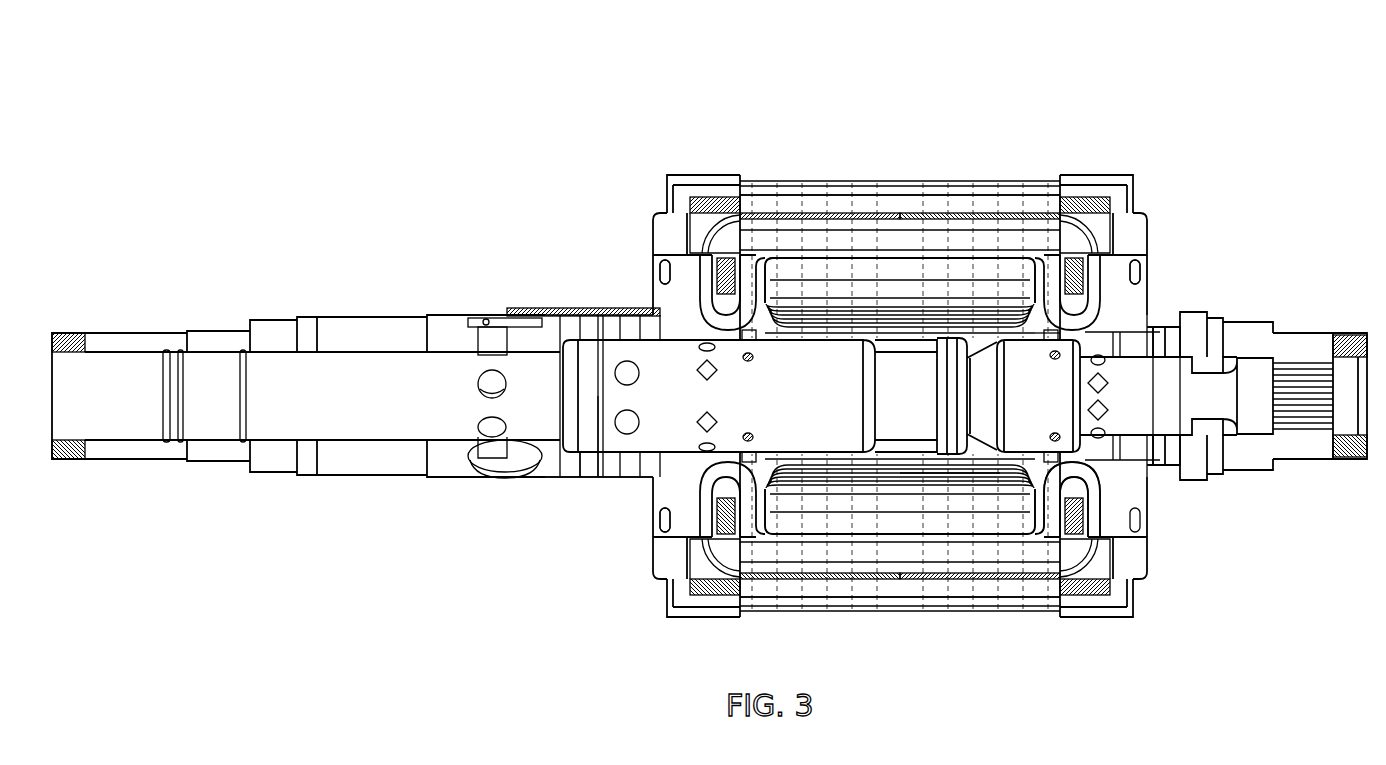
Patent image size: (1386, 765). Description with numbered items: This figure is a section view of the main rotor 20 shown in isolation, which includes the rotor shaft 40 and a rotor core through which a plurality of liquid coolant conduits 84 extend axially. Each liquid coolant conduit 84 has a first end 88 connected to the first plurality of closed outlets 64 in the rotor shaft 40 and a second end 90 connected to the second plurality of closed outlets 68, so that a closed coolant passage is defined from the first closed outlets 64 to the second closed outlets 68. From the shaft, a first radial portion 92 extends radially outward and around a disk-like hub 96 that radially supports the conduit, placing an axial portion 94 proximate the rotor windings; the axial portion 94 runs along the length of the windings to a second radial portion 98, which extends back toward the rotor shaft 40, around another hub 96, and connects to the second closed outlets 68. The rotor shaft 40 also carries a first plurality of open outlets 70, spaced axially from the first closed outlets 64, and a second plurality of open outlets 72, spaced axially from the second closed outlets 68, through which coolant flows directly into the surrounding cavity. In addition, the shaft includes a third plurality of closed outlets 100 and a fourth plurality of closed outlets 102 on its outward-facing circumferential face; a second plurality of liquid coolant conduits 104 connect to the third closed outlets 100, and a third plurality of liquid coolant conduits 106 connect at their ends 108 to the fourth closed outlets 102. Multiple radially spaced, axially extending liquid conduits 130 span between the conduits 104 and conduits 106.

The main rotor 20 is at (1031, 121).
The rotor shaft 40 is at (372, 478).
The first plurality of closed outlets 64 is at (705, 424).
The second plurality of closed outlets 68 is at (1104, 410).
The first plurality of open outlets 70 is at (632, 332).
The second plurality of open outlets 72 is at (1167, 343).
The liquid coolant conduits 84 is at (822, 258).
The first end 88 is at (668, 488).
The second end 90 is at (1100, 463).
The first radial portion 92 is at (672, 520).
The axial portion 94 is at (950, 258).
The disk-like hub 96 is at (702, 322).
The second radial portion 98 is at (1097, 510).
The third plurality of closed outlets 100 is at (748, 358).
The fourth plurality of closed outlets 102 is at (1055, 358).
The second plurality of liquid coolant conduits 104 is at (748, 462).
The third plurality of liquid coolant conduits 106 is at (1057, 463).
The ends 108 is at (1056, 330).
The axially extending liquid conduits 130 is at (957, 482).